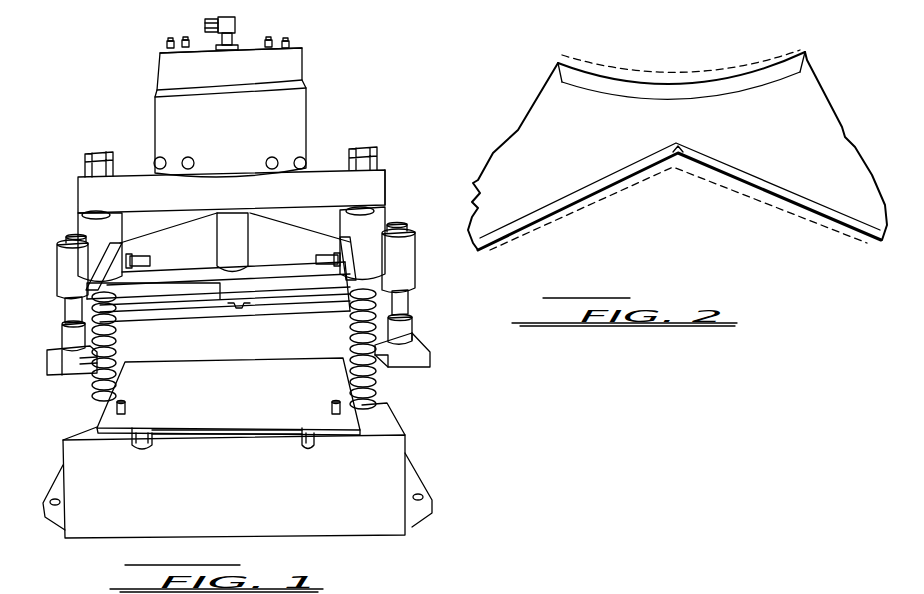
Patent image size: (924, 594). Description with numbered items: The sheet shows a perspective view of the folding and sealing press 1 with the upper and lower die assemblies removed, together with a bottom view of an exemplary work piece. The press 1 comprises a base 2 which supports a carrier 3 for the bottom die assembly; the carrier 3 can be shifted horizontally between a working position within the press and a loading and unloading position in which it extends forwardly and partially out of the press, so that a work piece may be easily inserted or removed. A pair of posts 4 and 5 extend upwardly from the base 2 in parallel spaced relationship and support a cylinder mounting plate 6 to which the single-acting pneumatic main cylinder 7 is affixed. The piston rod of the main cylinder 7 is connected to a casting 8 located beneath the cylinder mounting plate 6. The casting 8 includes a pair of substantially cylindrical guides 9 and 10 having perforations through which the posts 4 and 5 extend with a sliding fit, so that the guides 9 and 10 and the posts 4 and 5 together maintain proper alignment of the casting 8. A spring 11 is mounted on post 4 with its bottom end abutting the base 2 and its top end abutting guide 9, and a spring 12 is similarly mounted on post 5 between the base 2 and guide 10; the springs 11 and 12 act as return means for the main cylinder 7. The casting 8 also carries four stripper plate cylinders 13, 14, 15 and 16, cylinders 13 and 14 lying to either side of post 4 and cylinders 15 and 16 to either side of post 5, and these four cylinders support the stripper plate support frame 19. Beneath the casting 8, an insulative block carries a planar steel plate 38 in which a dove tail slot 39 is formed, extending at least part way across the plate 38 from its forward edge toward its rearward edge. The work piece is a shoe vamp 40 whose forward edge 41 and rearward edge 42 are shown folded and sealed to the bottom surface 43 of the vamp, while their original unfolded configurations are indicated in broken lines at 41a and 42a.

In FIG. 1, the folding and sealing press 1 is at (310, 113).
In FIG. 1, the base 2 is at (388, 476).
In FIG. 1, the carrier 3 is at (272, 364).
In FIG. 1, the post 4 is at (378, 384).
In FIG. 1, the post 5 is at (97, 377).
In FIG. 1, the cylinder mounting plate 6 is at (318, 183).
In FIG. 1, the main cylinder 7 is at (294, 68).
In FIG. 1, the casting 8 is at (300, 238).
In FIG. 1, the cylindrical guide 9 is at (386, 206).
In FIG. 1, the cylindrical guide 10 is at (86, 222).
In FIG. 1, the spring 11 is at (380, 376).
In FIG. 1, the spring 12 is at (117, 348).
In FIG. 1, the stripper plate cylinder 13 is at (403, 259).
In FIG. 1, the stripper plate cylinder 14 is at (378, 224).
In FIG. 1, the stripper plate cylinder 15 is at (62, 270).
In FIG. 1, the stripper plate cylinder 16 is at (70, 238).
In FIG. 1, the stripper plate support frame 19 is at (430, 356).
In FIG. 1, the steel plate 38 is at (213, 307).
In FIG. 1, the dove tail slot 39 is at (240, 302).
In FIG. 2, the shoe vamp 40 is at (823, 85).
In FIG. 2, the forward edge 41 is at (710, 90).
In FIG. 2, the unfolded forward edge 41a is at (617, 68).
In FIG. 2, the rearward edge 42 is at (738, 165).
In FIG. 2, the unfolded rearward edge 42a is at (737, 183).
In FIG. 2, the bottom surface 43 is at (572, 150).